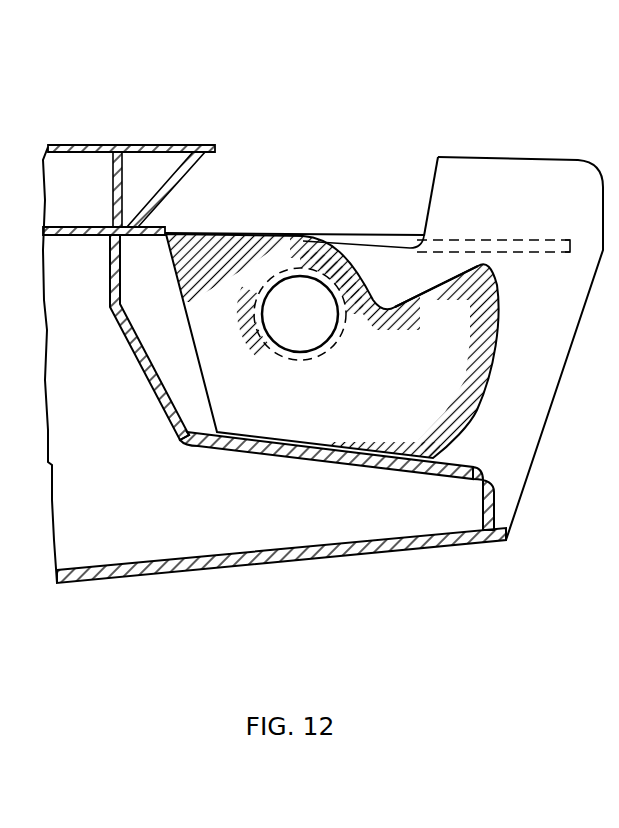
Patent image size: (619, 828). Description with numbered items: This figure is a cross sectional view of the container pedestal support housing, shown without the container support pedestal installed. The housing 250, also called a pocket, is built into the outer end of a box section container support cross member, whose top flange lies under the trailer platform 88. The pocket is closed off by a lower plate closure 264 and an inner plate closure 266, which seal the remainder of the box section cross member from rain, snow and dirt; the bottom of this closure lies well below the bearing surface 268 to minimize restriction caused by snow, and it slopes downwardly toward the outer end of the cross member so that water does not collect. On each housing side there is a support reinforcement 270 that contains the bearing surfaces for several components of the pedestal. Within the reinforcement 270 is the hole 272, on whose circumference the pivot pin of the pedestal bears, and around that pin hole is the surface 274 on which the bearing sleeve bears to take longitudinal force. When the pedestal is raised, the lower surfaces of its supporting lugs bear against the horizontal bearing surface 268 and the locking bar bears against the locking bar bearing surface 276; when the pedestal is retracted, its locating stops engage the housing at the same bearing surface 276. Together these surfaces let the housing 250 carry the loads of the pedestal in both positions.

The trailer platform 88 is at (148, 147).
The housing 250 is at (323, 326).
The lower plate closure 264 is at (277, 453).
The inner plate closure 266 is at (150, 378).
The bearing surface 268 is at (244, 226).
The support reinforcement 270 is at (460, 433).
The hole 272 is at (320, 360).
The surface around the pin hole 274 is at (352, 346).
The locking bar bearing surface 276 is at (443, 289).